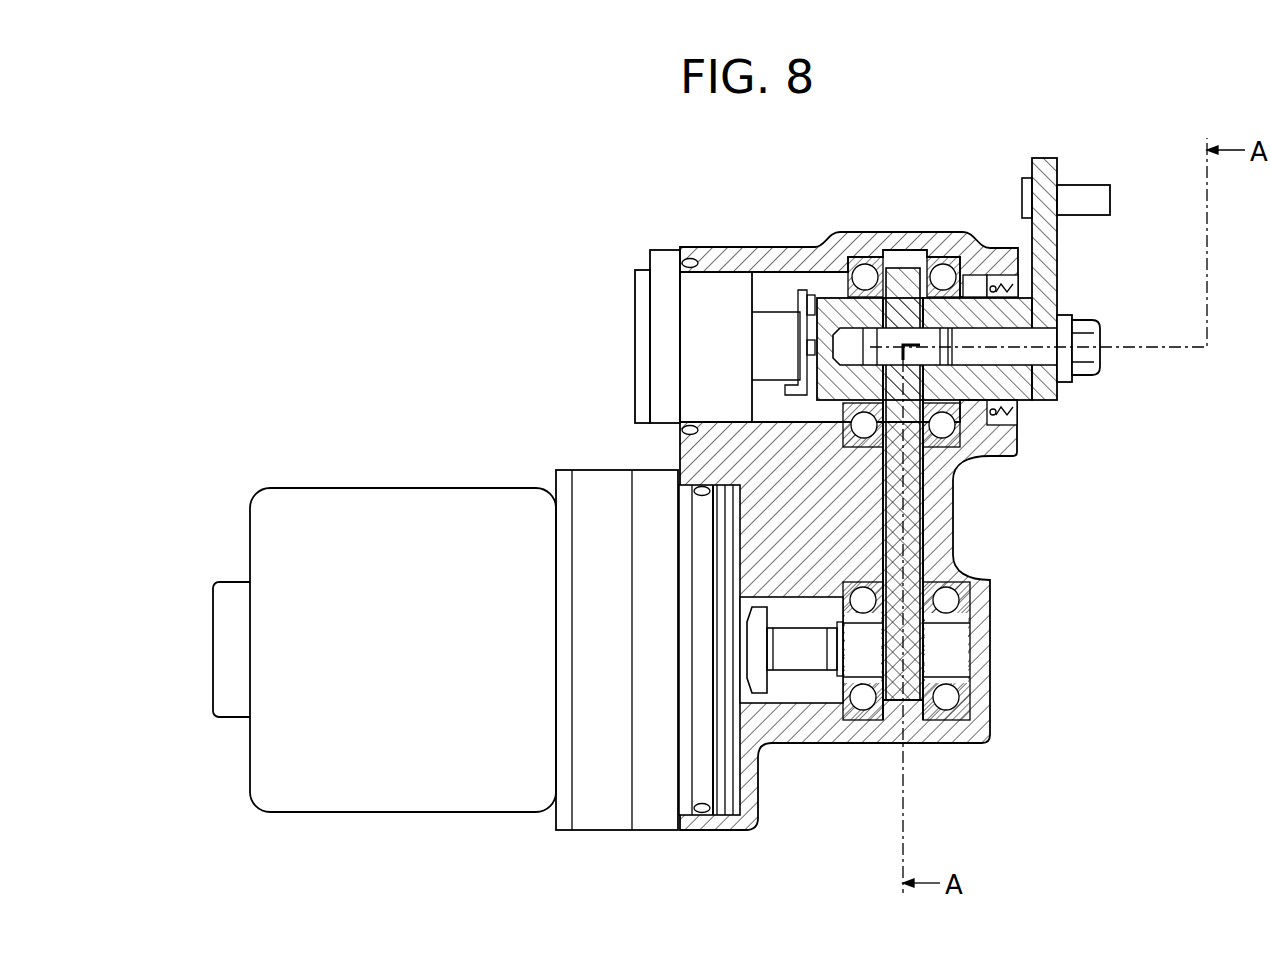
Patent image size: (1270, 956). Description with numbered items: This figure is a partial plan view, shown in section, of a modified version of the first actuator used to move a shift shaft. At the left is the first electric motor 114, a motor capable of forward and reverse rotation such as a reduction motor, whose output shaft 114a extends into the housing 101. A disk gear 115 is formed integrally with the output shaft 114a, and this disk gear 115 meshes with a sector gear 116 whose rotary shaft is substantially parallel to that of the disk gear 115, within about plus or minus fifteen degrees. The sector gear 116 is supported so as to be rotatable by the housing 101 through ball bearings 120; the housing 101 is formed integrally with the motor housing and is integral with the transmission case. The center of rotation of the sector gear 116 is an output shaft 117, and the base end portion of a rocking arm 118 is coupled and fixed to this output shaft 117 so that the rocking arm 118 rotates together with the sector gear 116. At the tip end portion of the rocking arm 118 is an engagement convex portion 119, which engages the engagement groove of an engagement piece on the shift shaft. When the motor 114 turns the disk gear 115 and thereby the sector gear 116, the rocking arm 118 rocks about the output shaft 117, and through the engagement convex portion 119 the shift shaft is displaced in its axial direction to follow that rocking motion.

The housing 101 is at (730, 255).
The first electric motor 114 is at (380, 505).
The output shaft 114a is at (805, 658).
The disk gear 115 is at (908, 680).
The sector gear 116 is at (912, 498).
The output shaft 117 is at (1032, 355).
The rocking arm 118 is at (1048, 266).
The engagement convex portion 119 is at (1105, 185).
The ball bearings 120 is at (865, 262).